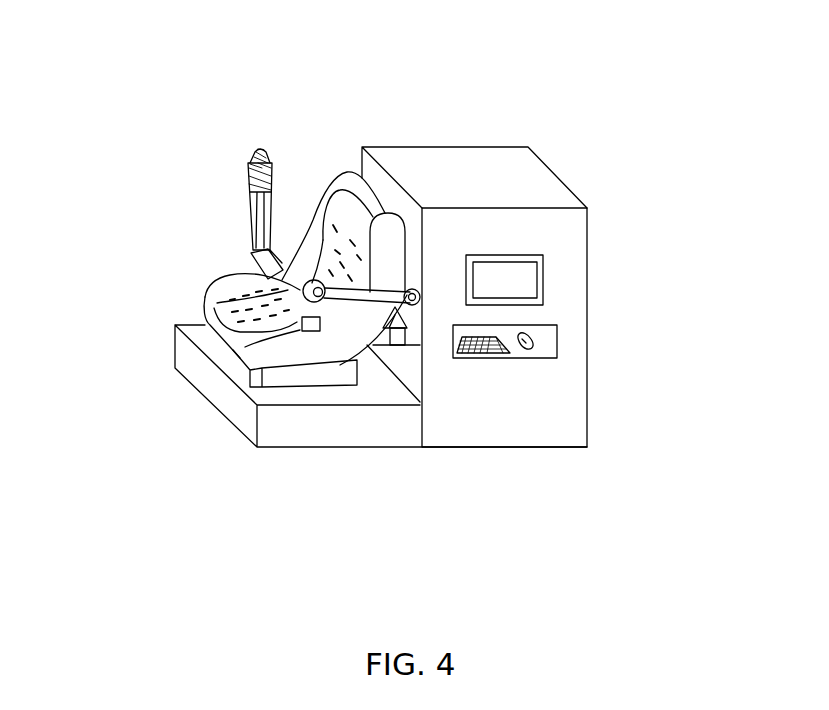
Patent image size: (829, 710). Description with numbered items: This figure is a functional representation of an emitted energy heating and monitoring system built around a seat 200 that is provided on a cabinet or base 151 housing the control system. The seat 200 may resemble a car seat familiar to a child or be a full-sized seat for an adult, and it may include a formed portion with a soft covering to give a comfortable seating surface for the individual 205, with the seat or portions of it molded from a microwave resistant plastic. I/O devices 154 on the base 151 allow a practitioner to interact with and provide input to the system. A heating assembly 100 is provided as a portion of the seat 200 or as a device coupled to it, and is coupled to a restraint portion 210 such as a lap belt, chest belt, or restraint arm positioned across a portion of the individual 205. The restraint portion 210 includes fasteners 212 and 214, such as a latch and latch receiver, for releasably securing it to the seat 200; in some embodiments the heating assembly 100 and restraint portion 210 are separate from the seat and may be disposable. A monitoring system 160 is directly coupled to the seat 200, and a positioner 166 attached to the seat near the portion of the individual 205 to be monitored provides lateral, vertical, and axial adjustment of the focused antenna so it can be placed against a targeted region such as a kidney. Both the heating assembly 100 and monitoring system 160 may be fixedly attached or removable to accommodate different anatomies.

The heating assembly 100 is at (245, 180).
The cabinet or base 151 is at (589, 257).
The I/O devices 154 is at (557, 342).
The monitoring system 160 is at (413, 340).
The positioner 166 is at (350, 305).
The seat 200 is at (360, 175).
The individual 205 is at (352, 192).
The restraint portion 210 is at (246, 209).
The fastener 212 is at (253, 150).
The fastener 214 is at (292, 327).